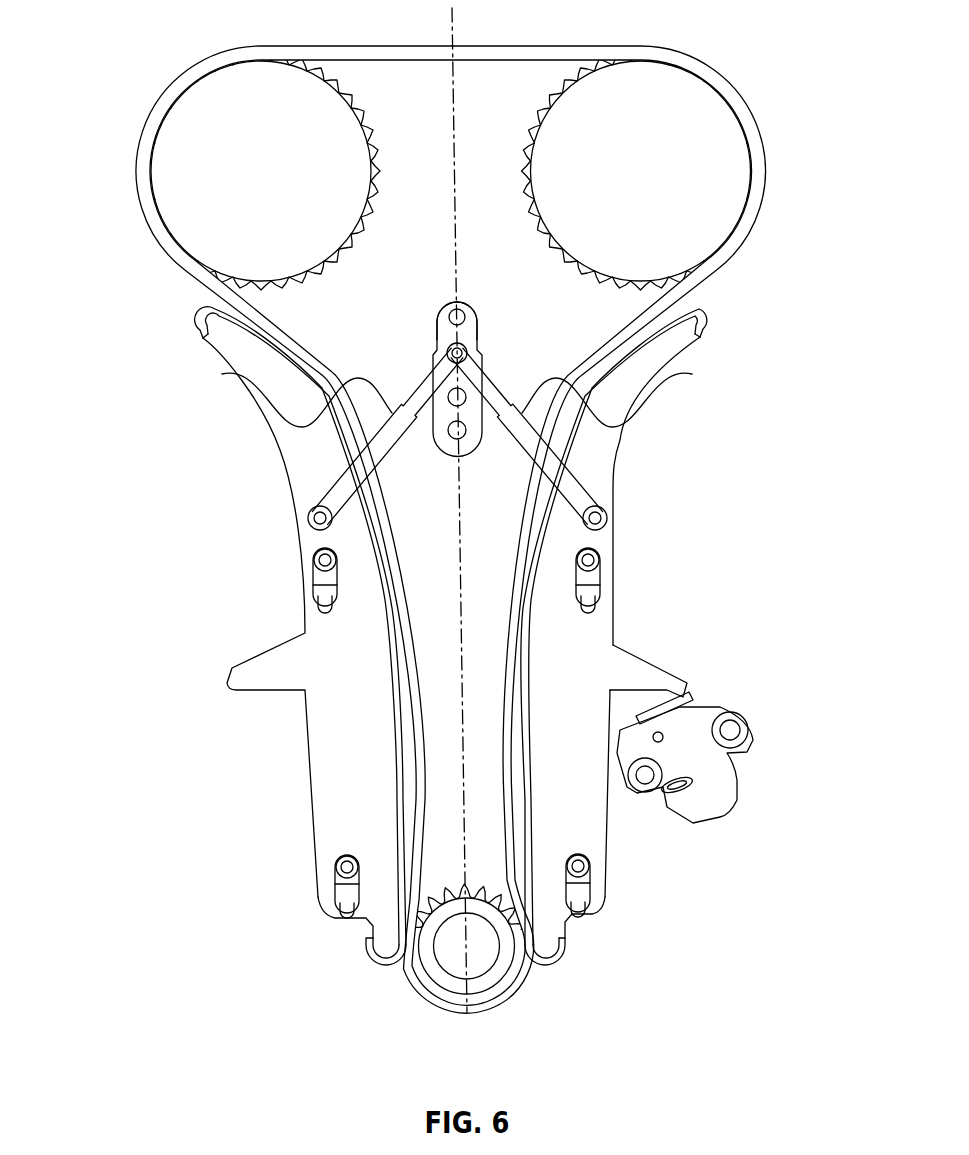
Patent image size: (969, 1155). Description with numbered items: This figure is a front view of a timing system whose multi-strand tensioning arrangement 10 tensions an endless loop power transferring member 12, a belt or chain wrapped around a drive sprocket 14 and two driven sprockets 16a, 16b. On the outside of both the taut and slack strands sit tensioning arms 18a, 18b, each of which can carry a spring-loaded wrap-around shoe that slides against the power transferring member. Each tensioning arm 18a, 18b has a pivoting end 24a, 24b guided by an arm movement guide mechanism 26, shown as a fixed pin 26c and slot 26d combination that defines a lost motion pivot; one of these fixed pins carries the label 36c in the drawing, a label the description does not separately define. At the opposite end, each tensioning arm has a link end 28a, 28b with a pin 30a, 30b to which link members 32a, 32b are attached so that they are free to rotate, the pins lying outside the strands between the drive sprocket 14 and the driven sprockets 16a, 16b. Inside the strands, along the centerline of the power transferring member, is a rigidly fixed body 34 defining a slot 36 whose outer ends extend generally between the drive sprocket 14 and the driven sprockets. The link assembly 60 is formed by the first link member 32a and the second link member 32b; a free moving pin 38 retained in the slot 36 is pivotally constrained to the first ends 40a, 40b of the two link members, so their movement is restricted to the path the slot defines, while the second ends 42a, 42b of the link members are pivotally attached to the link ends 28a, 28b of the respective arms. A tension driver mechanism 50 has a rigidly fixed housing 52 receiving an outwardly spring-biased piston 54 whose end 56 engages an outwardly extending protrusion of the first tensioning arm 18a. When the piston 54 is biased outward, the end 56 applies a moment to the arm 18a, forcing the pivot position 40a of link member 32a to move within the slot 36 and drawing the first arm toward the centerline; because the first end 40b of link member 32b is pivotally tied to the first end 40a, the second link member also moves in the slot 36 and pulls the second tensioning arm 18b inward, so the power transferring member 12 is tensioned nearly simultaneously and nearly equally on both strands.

The multi-strand tensioning arrangement 10 is at (150, 70).
The endless loop power transferring member 12 is at (140, 170).
The drive sprocket 14 is at (465, 975).
The driven sprocket 16a is at (200, 222).
The driven sprocket 16b is at (706, 192).
The first tensioning arm 18a is at (662, 663).
The second tensioning arm 18b is at (330, 905).
The pivoting end 24a is at (590, 925).
The pivoting end 24b is at (322, 940).
The arm movement guide mechanism 26 is at (343, 930).
The fixed pin 26c is at (318, 585).
The slot 26d is at (316, 602).
The link end 28a is at (685, 386).
The link end 28b is at (245, 373).
The pin 30a is at (598, 508).
The pin 30b is at (320, 507).
The first link member 32a is at (612, 420).
The second link member 32b is at (280, 425).
The fixed body 34 is at (437, 455).
The slot 36 is at (465, 305).
The fastener head 36c is at (602, 588).
The free moving pin 38 is at (466, 318).
The first end of link member 40a is at (470, 345).
The first end of link member 40b is at (446, 350).
The second end of link member 42a is at (605, 518).
The second end of link member 42b is at (310, 518).
The tension driver mechanism 50 is at (757, 718).
The fixed housing 52 is at (752, 740).
The piston 54 is at (722, 776).
The end of piston 56 is at (667, 692).
The link assembly 60 is at (480, 452).